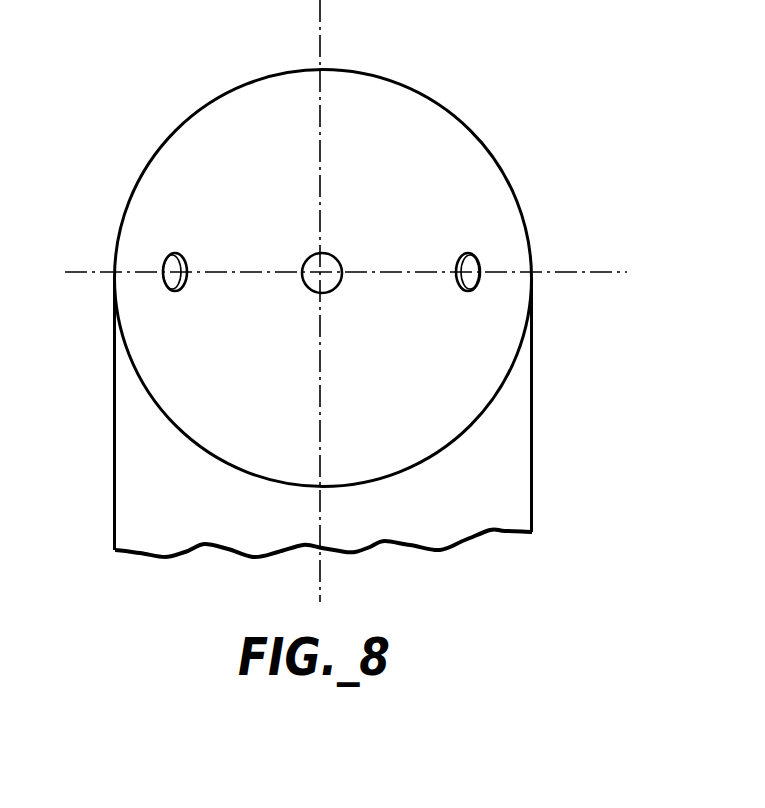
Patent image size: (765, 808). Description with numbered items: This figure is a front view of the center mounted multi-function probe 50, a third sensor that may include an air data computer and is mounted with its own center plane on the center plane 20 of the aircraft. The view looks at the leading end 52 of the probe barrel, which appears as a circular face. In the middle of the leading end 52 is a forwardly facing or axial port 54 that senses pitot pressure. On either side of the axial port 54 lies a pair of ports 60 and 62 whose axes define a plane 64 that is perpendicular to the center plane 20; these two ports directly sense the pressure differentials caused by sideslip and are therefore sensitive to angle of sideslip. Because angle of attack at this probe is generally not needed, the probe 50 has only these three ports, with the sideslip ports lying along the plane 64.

The center plane 20 is at (320, 12).
The probe 50 is at (316, 298).
The leading end 52 is at (177, 152).
The axial port 54 is at (334, 265).
The port 60 is at (176, 262).
The port 62 is at (473, 261).
The plane 64 is at (570, 273).